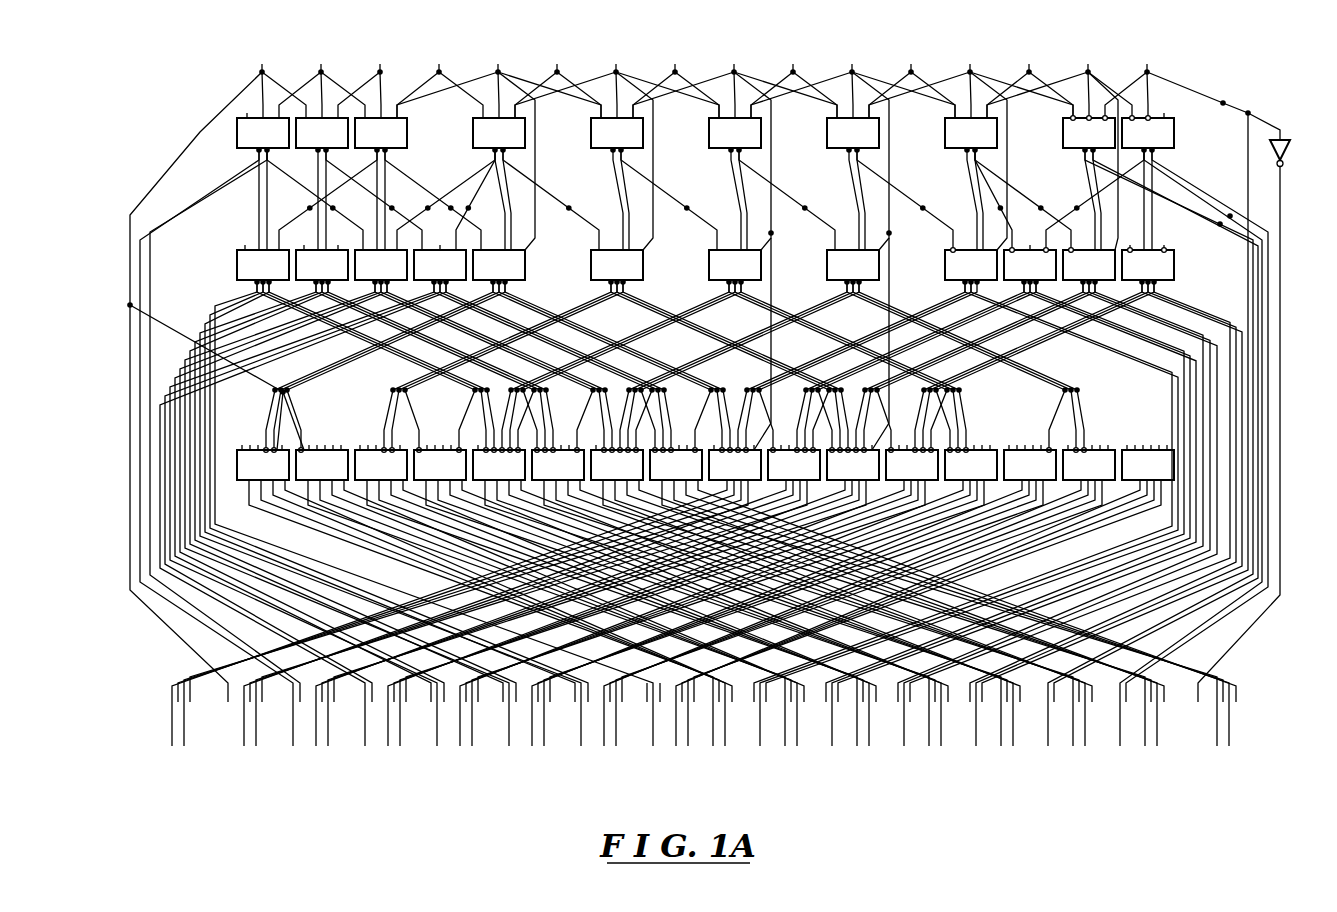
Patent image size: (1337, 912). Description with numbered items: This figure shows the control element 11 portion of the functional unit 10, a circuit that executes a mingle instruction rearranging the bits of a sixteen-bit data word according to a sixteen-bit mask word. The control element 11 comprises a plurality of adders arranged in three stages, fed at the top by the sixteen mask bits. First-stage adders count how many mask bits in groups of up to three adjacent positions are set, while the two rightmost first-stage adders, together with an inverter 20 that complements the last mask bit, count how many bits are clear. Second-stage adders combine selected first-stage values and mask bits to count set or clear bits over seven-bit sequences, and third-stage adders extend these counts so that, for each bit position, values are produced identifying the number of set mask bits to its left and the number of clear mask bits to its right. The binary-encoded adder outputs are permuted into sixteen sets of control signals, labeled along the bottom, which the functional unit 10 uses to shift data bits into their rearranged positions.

The functional unit 10 is at (1130, 860).
The control element 11 is at (334, 849).
The inverter 20 is at (1290, 151).